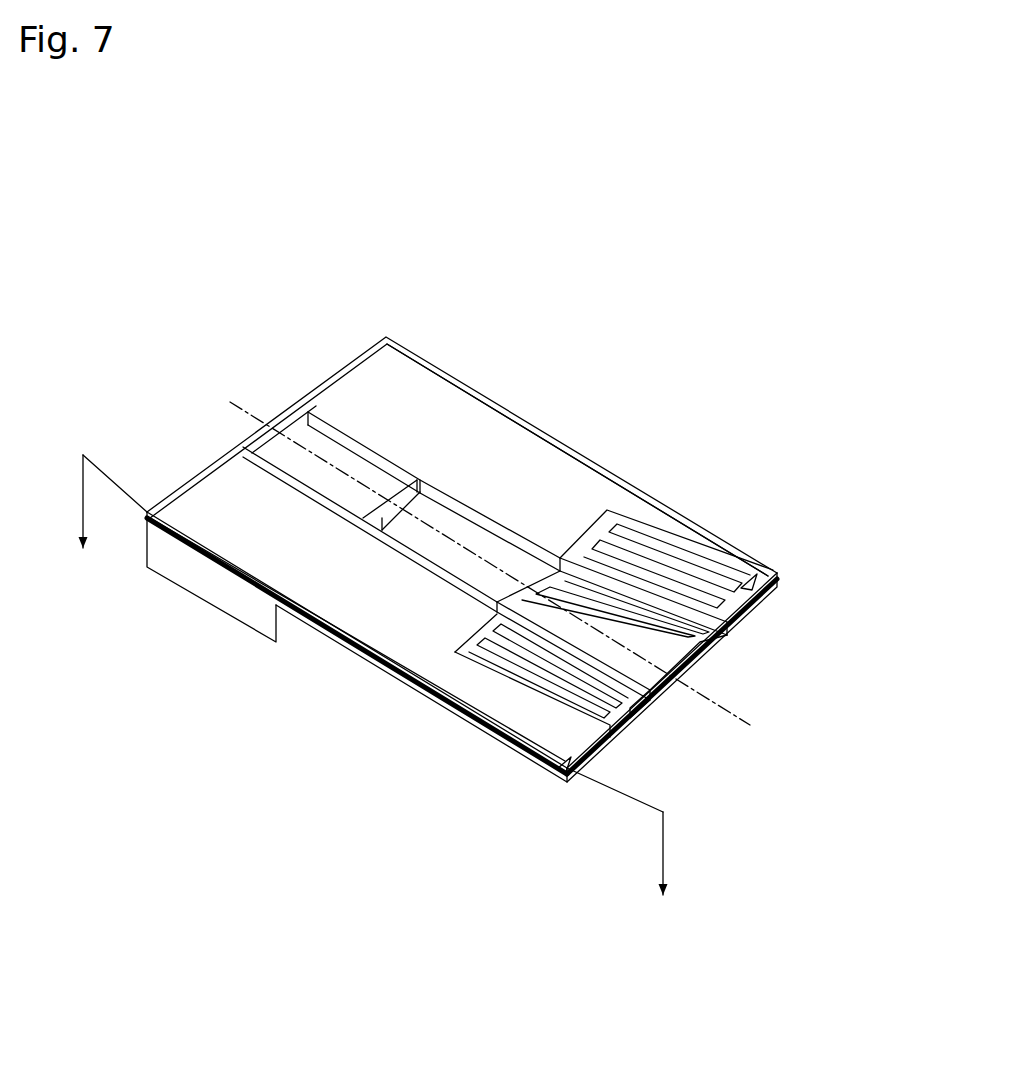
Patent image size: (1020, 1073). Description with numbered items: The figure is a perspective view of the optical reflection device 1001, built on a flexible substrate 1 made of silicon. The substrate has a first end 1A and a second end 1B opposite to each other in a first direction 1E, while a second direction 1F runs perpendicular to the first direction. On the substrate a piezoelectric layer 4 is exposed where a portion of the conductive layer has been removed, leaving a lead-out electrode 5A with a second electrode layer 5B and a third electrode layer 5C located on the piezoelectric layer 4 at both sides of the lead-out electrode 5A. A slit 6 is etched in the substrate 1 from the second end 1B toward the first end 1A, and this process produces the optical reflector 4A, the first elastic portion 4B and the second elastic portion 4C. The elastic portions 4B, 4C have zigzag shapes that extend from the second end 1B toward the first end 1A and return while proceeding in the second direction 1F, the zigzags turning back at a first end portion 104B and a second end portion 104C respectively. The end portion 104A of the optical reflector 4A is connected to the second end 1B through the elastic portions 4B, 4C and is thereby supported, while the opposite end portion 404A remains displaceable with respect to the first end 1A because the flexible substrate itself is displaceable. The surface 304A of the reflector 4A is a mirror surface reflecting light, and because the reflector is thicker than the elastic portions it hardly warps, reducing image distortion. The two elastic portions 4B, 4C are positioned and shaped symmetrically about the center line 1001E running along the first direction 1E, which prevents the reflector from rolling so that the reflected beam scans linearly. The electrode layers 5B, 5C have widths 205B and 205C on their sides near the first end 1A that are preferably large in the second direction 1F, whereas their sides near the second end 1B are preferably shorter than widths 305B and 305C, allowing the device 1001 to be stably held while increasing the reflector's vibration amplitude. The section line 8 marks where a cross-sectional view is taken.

The optical reflection device 1001 is at (683, 398).
The center line 1001E is at (238, 412).
The flexible substrate 1 is at (547, 772).
The first end 1A is at (173, 485).
The second end 1B is at (762, 596).
The first direction 1E is at (507, 242).
The second direction 1F is at (755, 792).
The piezoelectric layer 4 is at (350, 357).
The optical reflector 4A is at (530, 657).
The first elastic portion 4B is at (537, 700).
The second elastic portion 4C is at (673, 570).
The lead-out electrode 5A is at (300, 428).
The second electrode layer 5B is at (318, 580).
The third electrode layer 5C is at (492, 425).
The slit 6 is at (421, 480).
The section line 8 is at (372, 691).
The end portion of optical reflector 104A is at (656, 673).
The first end portion 104B is at (495, 642).
The second end portion 104C is at (577, 560).
The width of second electrode layer near first end 205B is at (242, 462).
The width of third electrode layer near first end 205C is at (385, 350).
The surface of optical reflector 304A is at (668, 698).
The width of second electrode layer 305B is at (573, 775).
The width of third electrode layer 305C is at (757, 578).
The end portion opposite end portion 104A 404A is at (393, 497).